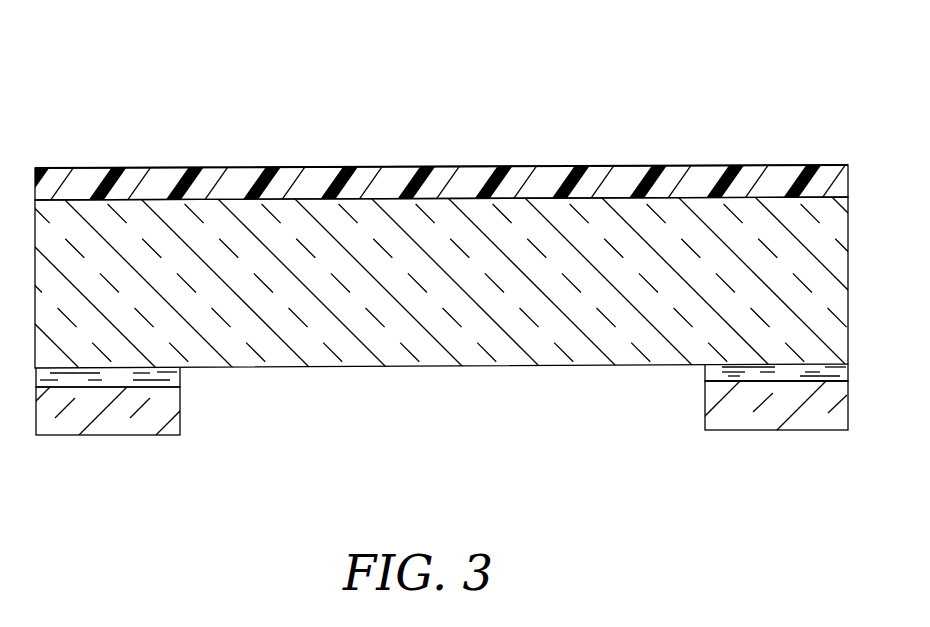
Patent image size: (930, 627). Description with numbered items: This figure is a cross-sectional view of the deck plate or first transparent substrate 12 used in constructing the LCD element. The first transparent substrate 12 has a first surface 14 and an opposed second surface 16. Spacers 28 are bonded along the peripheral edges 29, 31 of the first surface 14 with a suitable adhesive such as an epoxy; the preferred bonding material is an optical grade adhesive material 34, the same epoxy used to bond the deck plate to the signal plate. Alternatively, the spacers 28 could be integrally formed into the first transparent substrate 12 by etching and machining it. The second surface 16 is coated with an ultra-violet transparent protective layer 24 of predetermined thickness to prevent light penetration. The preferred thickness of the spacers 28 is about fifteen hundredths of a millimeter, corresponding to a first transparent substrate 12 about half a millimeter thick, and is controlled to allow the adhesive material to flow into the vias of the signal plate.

The first transparent substrate 12 is at (468, 62).
The first surface 14 is at (444, 367).
The second surface 16 is at (443, 165).
The protective layer 24 is at (628, 173).
The spacers 28 is at (180, 423).
The peripheral edge 29 is at (180, 372).
The peripheral edge 31 is at (707, 371).
The optical grade adhesive material 34 is at (705, 381).